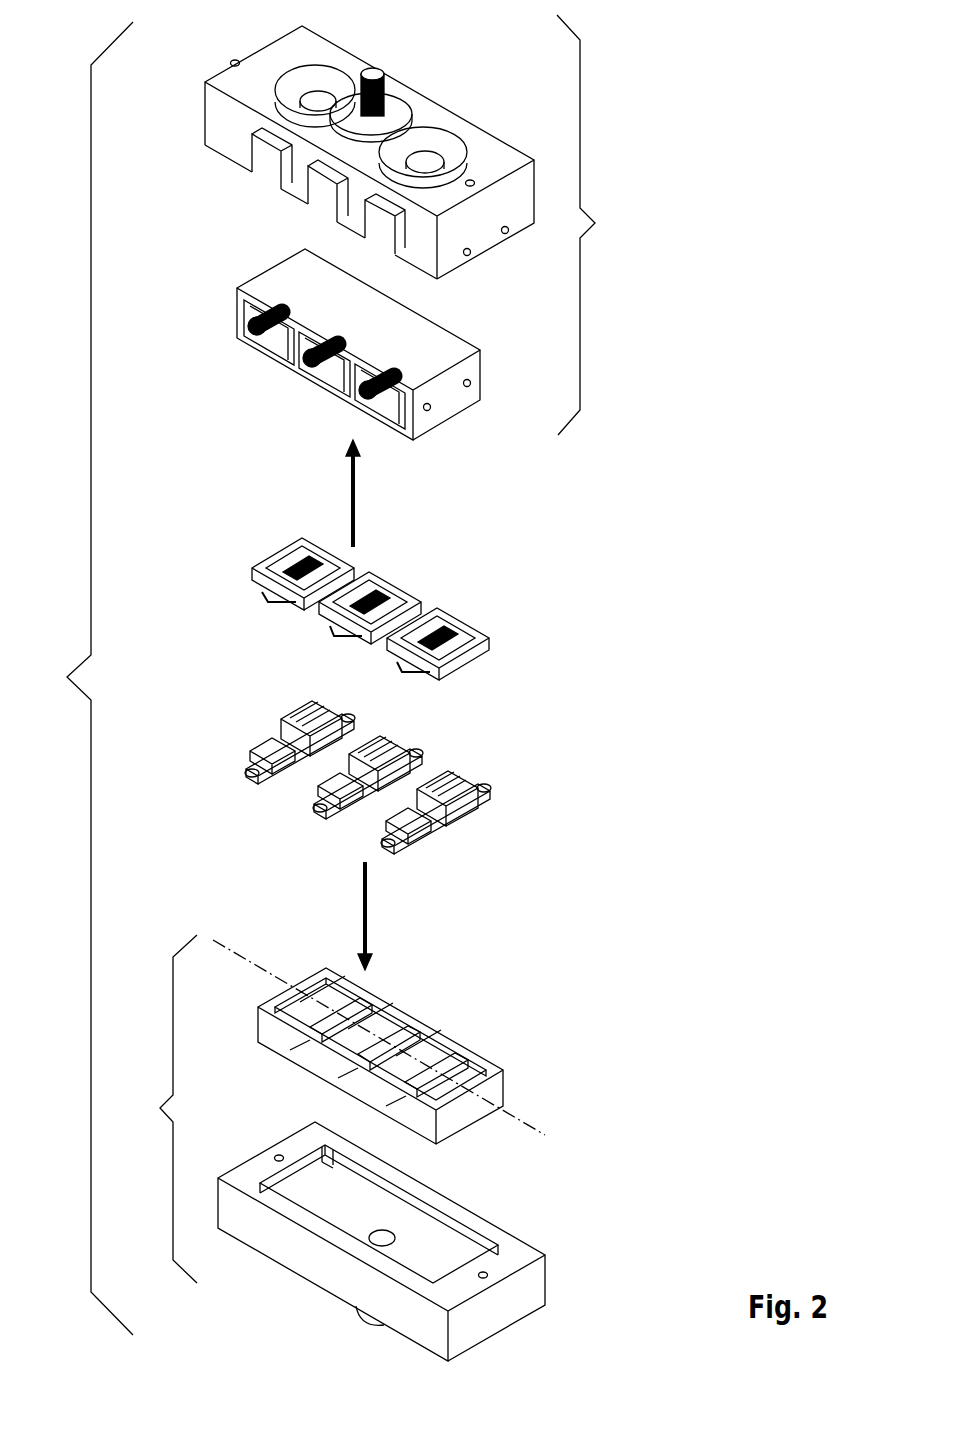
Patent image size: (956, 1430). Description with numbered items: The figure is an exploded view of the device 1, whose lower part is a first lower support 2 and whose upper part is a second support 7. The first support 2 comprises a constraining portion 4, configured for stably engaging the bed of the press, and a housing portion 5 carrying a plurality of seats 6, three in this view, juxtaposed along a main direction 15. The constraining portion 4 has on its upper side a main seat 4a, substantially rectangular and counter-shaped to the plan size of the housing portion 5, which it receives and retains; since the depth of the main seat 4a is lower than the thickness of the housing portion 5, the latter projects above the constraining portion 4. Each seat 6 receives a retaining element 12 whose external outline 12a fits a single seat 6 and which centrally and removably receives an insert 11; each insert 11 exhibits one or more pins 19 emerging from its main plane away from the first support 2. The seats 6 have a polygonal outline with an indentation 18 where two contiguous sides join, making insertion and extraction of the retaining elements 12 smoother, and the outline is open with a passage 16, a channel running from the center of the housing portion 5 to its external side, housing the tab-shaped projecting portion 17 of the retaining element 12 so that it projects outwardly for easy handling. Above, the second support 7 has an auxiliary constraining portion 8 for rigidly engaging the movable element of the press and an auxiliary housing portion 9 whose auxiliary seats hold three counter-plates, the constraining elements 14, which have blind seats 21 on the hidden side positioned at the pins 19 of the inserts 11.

The device 1 is at (89, 678).
The first lower support 2 is at (355, 1148).
The constraining portion 4 is at (394, 1241).
The main seat 4a is at (445, 1222).
The housing portion 5 is at (375, 1027).
The seats 6 is at (345, 975).
The second support 7 is at (410, 226).
The auxiliary constraining portion 8 is at (428, 112).
The auxiliary housing portion 9 is at (290, 285).
The insert 11 is at (324, 700).
The retaining element 12 is at (394, 774).
The external outline 12a is at (372, 748).
The constraining elements 14 is at (359, 586).
The main direction 15 is at (256, 946).
The passage 16 is at (382, 1105).
The projecting portion 17 is at (242, 785).
The indentation 18 is at (380, 995).
The pins 19 is at (318, 708).
The blind seats 21 is at (334, 626).